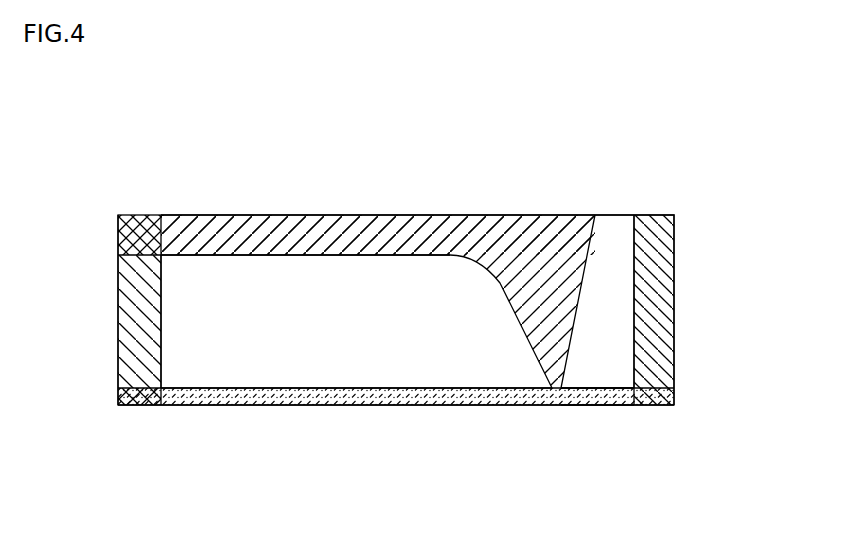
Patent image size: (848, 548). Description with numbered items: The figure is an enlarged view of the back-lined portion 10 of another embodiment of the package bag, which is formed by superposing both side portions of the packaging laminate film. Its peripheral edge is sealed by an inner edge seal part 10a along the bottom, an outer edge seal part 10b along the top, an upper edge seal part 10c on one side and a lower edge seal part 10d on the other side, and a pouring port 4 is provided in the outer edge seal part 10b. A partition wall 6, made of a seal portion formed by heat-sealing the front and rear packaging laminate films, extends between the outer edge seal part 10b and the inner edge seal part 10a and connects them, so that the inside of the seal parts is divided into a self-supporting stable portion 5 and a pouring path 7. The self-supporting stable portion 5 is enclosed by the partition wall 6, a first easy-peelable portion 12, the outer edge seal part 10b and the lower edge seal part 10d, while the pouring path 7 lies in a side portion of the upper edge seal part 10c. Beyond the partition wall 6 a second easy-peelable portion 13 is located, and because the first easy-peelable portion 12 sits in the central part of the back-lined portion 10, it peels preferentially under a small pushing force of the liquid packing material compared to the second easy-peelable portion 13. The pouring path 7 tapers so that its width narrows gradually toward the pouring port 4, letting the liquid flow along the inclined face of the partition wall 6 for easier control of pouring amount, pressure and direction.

The back-lined portion 10 is at (393, 309).
The inner edge seal part 10a is at (258, 413).
The outer edge seal part 10b is at (330, 237).
The upper edge seal part 10c is at (648, 245).
The lower edge seal part 10d is at (135, 331).
The pouring port 4 is at (612, 215).
The self-supporting stable portion 5 is at (303, 327).
The partition wall 6 is at (557, 287).
The pouring path 7 is at (613, 363).
The first easy-peelable portion 12 is at (443, 395).
The second easy-peelable portion 13 is at (595, 393).